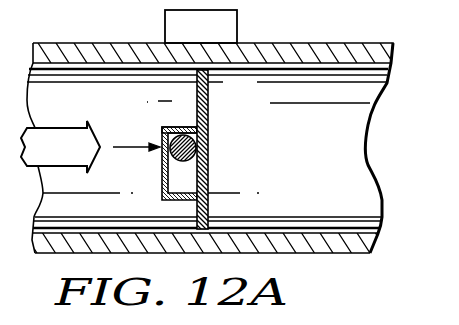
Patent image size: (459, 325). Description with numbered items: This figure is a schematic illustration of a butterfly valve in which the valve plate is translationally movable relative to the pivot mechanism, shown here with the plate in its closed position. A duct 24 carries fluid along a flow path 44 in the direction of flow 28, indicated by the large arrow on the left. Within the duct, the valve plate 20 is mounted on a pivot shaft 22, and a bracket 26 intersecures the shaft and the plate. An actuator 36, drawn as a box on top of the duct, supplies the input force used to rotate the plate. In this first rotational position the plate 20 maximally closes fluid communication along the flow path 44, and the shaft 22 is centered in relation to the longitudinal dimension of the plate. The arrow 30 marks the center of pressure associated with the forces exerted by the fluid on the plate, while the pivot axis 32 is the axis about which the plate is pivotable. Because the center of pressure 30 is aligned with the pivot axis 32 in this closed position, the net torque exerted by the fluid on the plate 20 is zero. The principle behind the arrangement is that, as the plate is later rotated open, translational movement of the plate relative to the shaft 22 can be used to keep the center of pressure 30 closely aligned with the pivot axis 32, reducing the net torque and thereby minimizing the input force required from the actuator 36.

The valve plate 20 is at (210, 97).
The pivot shaft 22 is at (161, 174).
The duct 24 is at (285, 43).
The bracket 26 is at (173, 127).
The direction of flow 28 is at (60, 128).
The center of pressure 30 is at (139, 147).
The pivot axis 32 is at (211, 148).
The actuator 36 is at (165, 17).
The flow path 44 is at (298, 185).